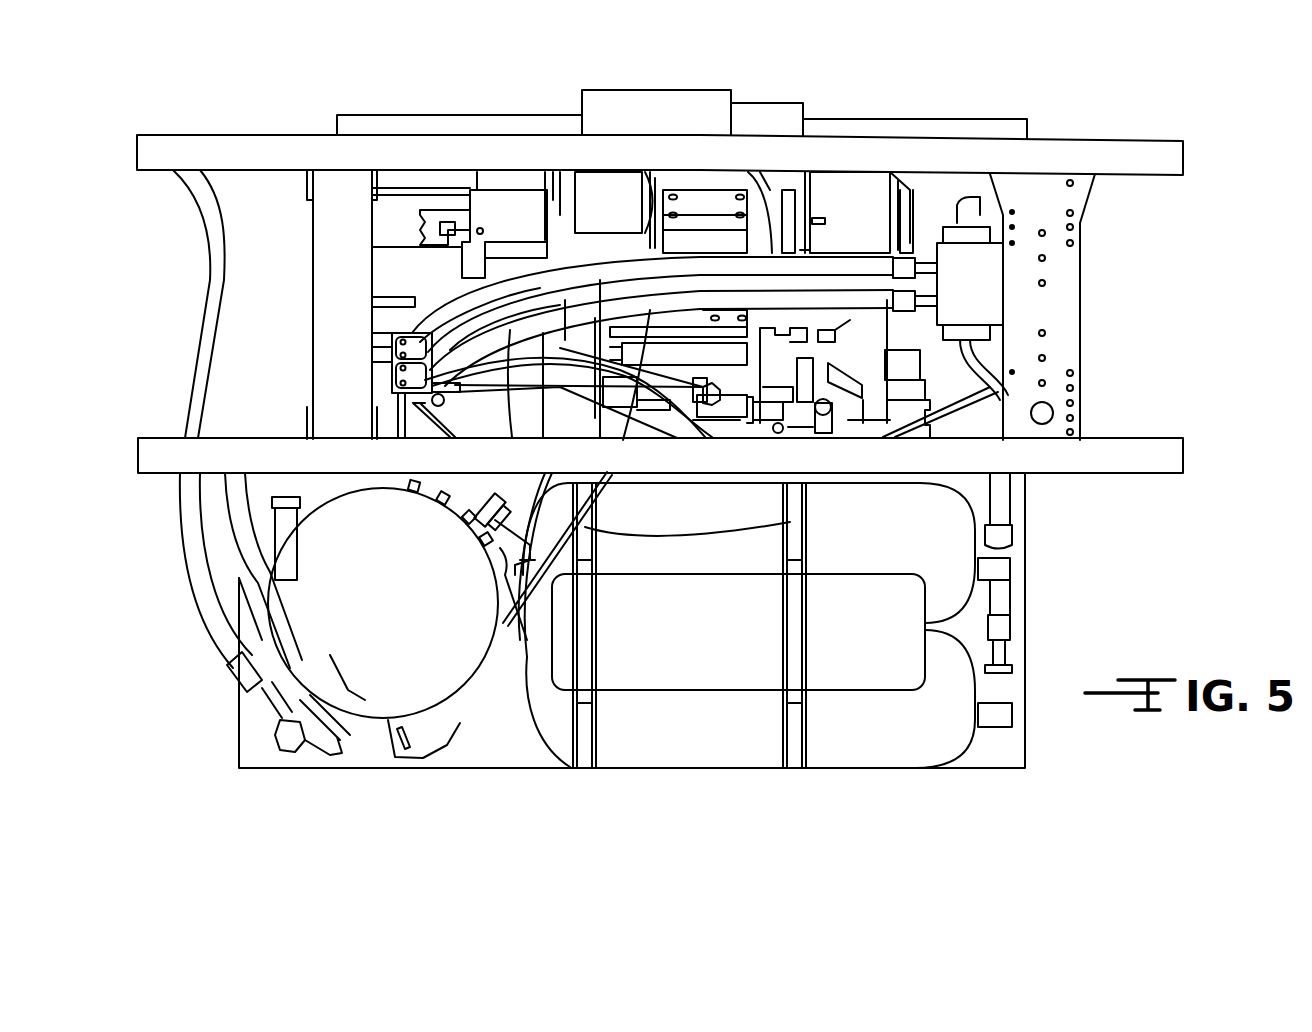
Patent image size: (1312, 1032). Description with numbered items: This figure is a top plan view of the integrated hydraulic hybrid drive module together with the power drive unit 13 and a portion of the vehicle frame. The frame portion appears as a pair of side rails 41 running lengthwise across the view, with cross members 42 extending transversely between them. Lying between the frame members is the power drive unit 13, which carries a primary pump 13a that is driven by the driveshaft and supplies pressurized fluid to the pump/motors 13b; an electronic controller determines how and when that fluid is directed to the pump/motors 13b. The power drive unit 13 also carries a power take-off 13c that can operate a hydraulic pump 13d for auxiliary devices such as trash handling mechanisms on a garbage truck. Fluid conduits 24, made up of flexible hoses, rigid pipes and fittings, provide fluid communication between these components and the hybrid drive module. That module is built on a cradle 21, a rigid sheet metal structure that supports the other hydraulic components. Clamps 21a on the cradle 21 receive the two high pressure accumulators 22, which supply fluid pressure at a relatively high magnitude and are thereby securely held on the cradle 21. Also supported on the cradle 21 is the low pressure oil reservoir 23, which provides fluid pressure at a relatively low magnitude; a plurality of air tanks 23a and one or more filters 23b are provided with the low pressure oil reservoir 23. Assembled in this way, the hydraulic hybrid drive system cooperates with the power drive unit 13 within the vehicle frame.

The power drive unit 13 is at (700, 213).
The primary pump 13a is at (373, 333).
The pump/motor 13b is at (853, 357).
The power take-off 13c is at (605, 195).
The hydraulic pump 13d is at (512, 208).
The fluid conduits 24 is at (800, 267).
The side rails 41 is at (1110, 153).
The cross members 42 is at (333, 360).
The cradle 21 is at (1018, 623).
The clamps 21a is at (793, 503).
The high pressure accumulators 22 is at (940, 565).
The low pressure oil reservoir 23 is at (367, 630).
The air tanks 23a is at (673, 643).
The filters 23b is at (308, 718).